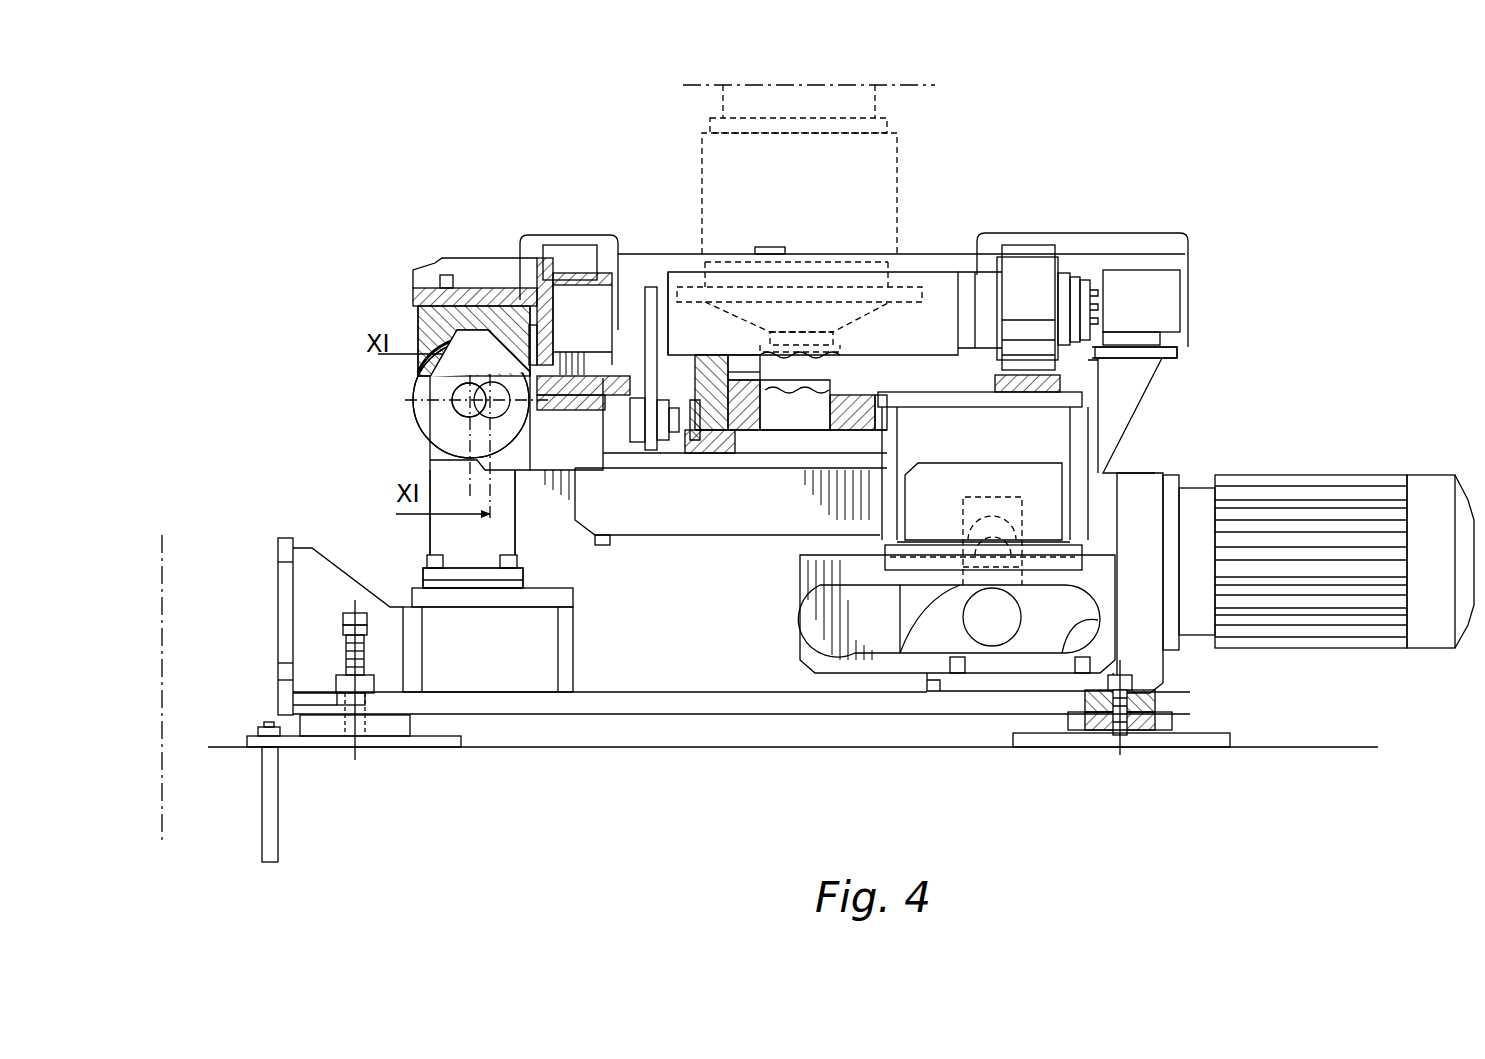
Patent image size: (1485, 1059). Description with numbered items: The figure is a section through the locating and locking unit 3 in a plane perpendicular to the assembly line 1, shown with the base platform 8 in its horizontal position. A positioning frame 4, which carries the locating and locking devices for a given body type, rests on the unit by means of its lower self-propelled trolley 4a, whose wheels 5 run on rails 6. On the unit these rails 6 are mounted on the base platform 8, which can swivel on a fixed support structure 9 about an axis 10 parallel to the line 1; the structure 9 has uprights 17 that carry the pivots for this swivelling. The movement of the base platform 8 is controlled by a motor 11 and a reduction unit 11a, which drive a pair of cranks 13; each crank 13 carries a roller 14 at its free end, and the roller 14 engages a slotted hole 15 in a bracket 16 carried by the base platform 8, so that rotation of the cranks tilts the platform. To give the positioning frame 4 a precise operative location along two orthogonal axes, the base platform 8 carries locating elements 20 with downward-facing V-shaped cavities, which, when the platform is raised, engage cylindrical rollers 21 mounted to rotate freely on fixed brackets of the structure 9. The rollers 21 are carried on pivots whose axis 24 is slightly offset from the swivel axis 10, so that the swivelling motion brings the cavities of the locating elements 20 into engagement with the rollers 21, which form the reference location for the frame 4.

The assembly line 1 is at (172, 592).
The locating and locking unit 3 is at (1268, 220).
The positioning frame 4 is at (892, 122).
The self-propelled trolley 4a is at (930, 256).
The wheels 5 is at (570, 250).
The rails 6 is at (605, 368).
The base platform 8 is at (682, 612).
The fixed support structure 9 is at (512, 700).
The axis 10 is at (455, 425).
The motor 11 is at (1320, 490).
The reduction unit 11a is at (1158, 468).
The cranks 13 is at (940, 590).
The roller 14 is at (985, 632).
The slotted hole 15 is at (1085, 625).
The bracket 16 is at (822, 584).
The uprights 17 is at (513, 540).
The locating elements 20 is at (420, 322).
The cylindrical rollers 21 is at (413, 388).
The axis 24 is at (465, 388).